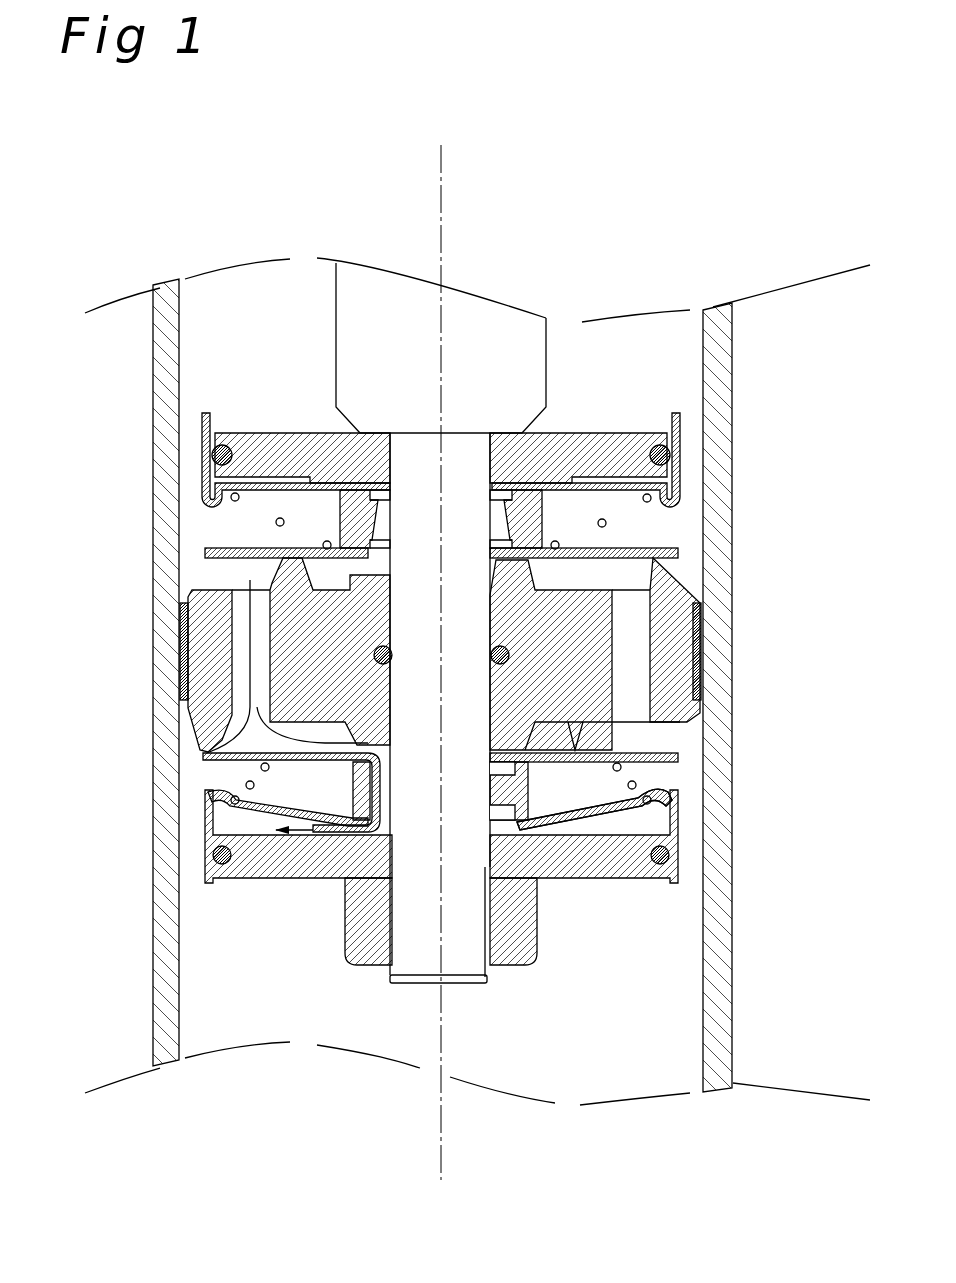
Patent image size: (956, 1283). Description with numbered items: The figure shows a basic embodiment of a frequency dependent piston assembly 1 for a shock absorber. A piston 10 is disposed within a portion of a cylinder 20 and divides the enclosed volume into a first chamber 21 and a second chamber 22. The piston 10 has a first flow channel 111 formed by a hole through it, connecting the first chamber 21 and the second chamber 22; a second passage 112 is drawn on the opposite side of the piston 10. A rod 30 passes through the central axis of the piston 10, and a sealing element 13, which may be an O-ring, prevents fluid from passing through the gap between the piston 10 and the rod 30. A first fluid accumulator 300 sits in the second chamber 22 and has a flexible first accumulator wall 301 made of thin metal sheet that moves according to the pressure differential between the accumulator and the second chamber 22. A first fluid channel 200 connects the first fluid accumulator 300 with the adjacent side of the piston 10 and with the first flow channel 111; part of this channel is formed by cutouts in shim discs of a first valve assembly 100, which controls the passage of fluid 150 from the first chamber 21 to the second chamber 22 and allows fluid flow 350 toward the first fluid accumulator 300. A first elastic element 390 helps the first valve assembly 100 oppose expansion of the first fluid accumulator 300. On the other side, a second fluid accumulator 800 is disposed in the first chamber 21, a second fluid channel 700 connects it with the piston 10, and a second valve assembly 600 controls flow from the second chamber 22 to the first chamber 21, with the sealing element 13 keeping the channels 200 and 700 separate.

The frequency dependent piston assembly 1 is at (633, 286).
The piston 10 is at (653, 634).
The sealing element 13 is at (510, 657).
The cylinder 20 is at (153, 1001).
The first chamber 21 is at (258, 332).
The second chamber 22 is at (518, 1052).
The rod 30 is at (378, 375).
The first valve assembly 100 is at (637, 785).
The first flow channel 111 is at (238, 602).
The second flow channel 112 is at (637, 705).
The fluid 150 is at (250, 655).
The first fluid channel 200 is at (362, 788).
The first fluid accumulator 300 is at (200, 847).
The first accumulator wall 301 is at (664, 857).
The fluid flow 350 is at (355, 878).
The first elastic element 390 is at (633, 810).
The second valve assembly 600 is at (678, 552).
The second fluid channel 700 is at (363, 517).
The second fluid accumulator 800 is at (193, 458).